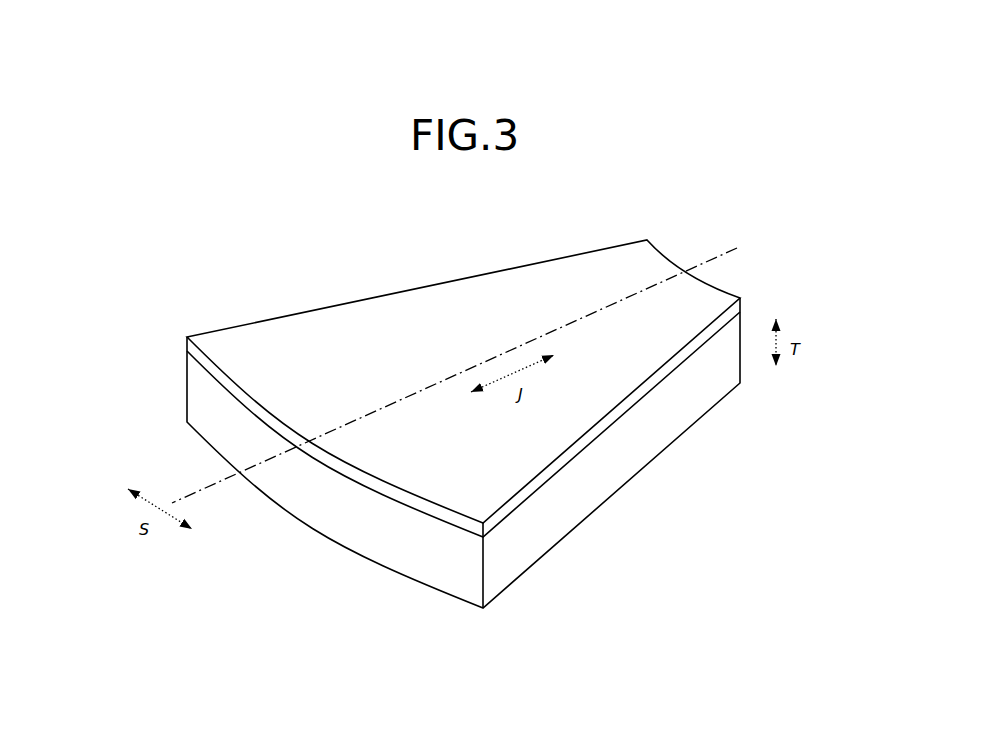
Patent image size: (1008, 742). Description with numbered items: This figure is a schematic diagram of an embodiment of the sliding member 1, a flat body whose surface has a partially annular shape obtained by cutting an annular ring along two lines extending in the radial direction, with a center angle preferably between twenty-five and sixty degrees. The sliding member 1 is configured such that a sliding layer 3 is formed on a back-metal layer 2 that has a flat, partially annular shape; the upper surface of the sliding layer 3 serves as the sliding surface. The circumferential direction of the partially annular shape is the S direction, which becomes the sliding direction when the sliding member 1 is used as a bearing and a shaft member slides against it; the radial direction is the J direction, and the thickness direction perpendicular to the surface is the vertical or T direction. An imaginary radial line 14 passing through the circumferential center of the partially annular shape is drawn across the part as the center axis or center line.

The sliding member 1 is at (428, 416).
The back-metal layer 2 is at (192, 393).
The sliding layer 3 is at (188, 344).
The center line 14 is at (720, 253).